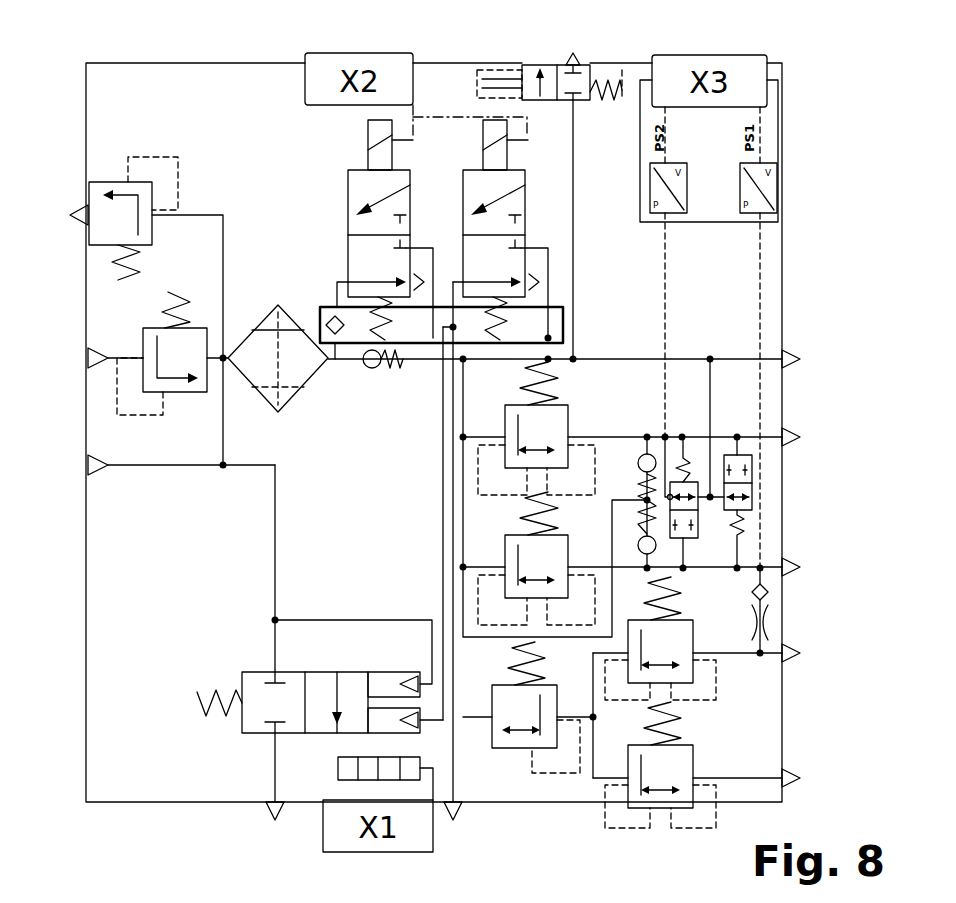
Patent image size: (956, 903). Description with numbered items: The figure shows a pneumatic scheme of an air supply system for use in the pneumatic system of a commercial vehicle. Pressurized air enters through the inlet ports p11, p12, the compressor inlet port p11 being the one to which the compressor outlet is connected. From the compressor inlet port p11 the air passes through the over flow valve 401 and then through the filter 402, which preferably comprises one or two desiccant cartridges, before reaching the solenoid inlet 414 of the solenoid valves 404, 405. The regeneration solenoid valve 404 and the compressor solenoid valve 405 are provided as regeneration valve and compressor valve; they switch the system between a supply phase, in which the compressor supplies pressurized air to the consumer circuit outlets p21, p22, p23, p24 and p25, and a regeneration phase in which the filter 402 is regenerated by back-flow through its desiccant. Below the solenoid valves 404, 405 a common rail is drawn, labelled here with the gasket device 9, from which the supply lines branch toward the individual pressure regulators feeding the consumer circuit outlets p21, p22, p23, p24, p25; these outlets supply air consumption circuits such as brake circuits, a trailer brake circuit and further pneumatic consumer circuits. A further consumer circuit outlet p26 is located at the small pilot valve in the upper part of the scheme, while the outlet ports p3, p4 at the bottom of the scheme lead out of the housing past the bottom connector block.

The gasket device 9 is at (568, 318).
The over flow valve 401 is at (193, 340).
The filter 402 is at (322, 384).
The regeneration solenoid valve 404 is at (356, 213).
The compressor solenoid valve 405 is at (520, 210).
The solenoid inlet 414 is at (417, 250).
The compressor inlet port p11 is at (78, 350).
The inlet port p12 is at (144, 461).
The outlet port p3 is at (269, 798).
The outlet port p4 is at (469, 832).
The consumer circuit outlet p21 is at (726, 567).
The consumer circuit outlet p22 is at (726, 439).
The consumer circuit outlet p23 is at (789, 652).
The consumer circuit outlet p24 is at (789, 779).
The consumer circuit outlet p25 is at (606, 361).
The consumer circuit outlet p26 is at (549, 191).